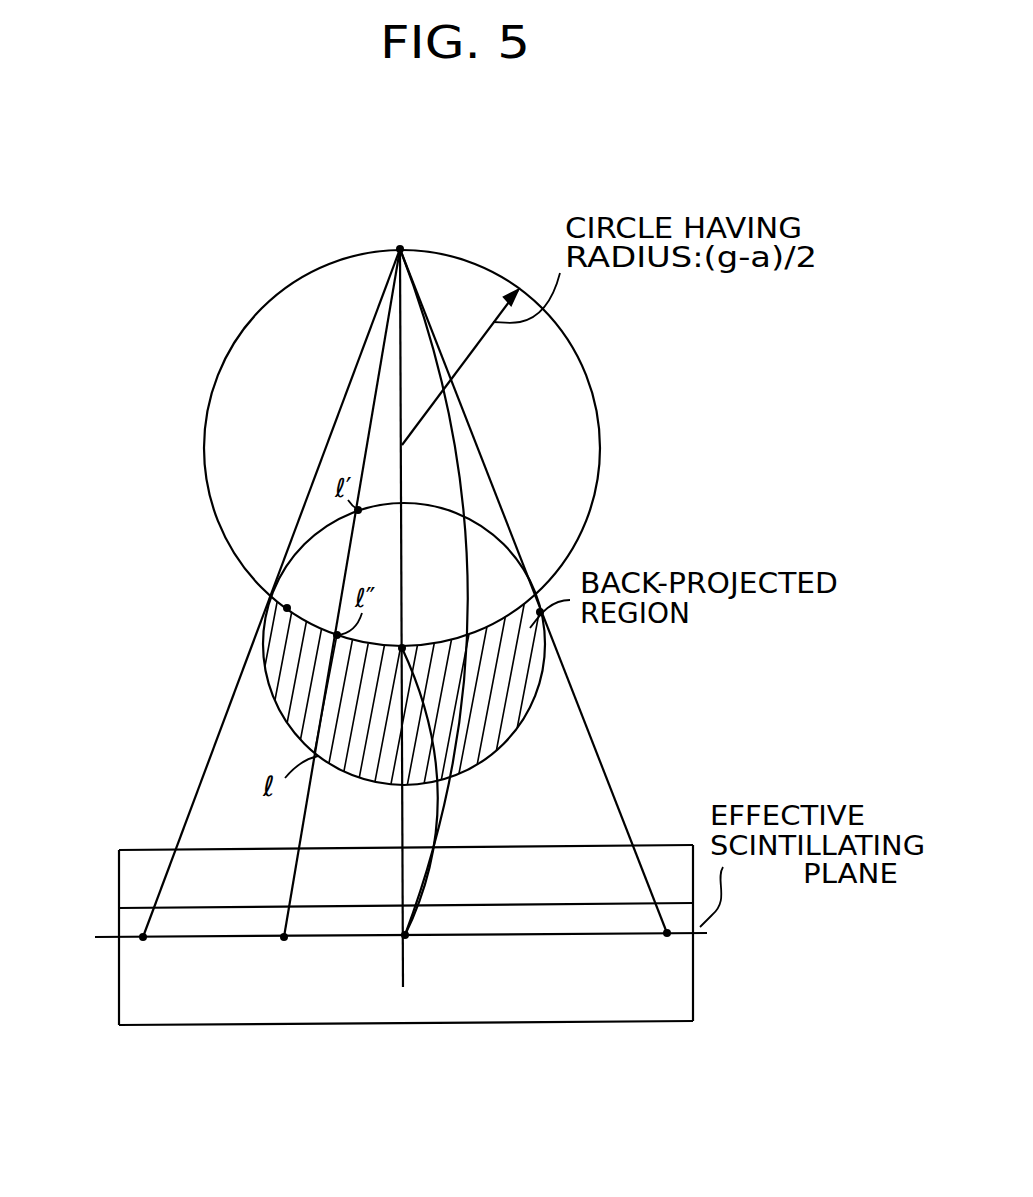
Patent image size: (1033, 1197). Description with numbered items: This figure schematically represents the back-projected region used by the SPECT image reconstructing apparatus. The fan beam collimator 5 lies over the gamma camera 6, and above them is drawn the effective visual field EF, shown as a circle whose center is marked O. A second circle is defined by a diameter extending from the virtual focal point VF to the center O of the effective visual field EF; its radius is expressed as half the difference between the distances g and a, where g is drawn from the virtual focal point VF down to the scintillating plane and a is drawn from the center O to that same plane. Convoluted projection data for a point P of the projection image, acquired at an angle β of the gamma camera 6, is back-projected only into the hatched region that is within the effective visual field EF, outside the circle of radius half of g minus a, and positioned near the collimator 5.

The fan beam collimator 5 is at (119, 850).
The gamma camera 6 is at (685, 953).
The virtual focal point VF is at (400, 249).
The effective visual field EF is at (542, 660).
The center point O is at (416, 629).
The distance g from virtual focus to scintillating plane g is at (438, 592).
The distance a from point O to scintillating plane a is at (423, 791).
The point of a projection image P is at (330, 954).